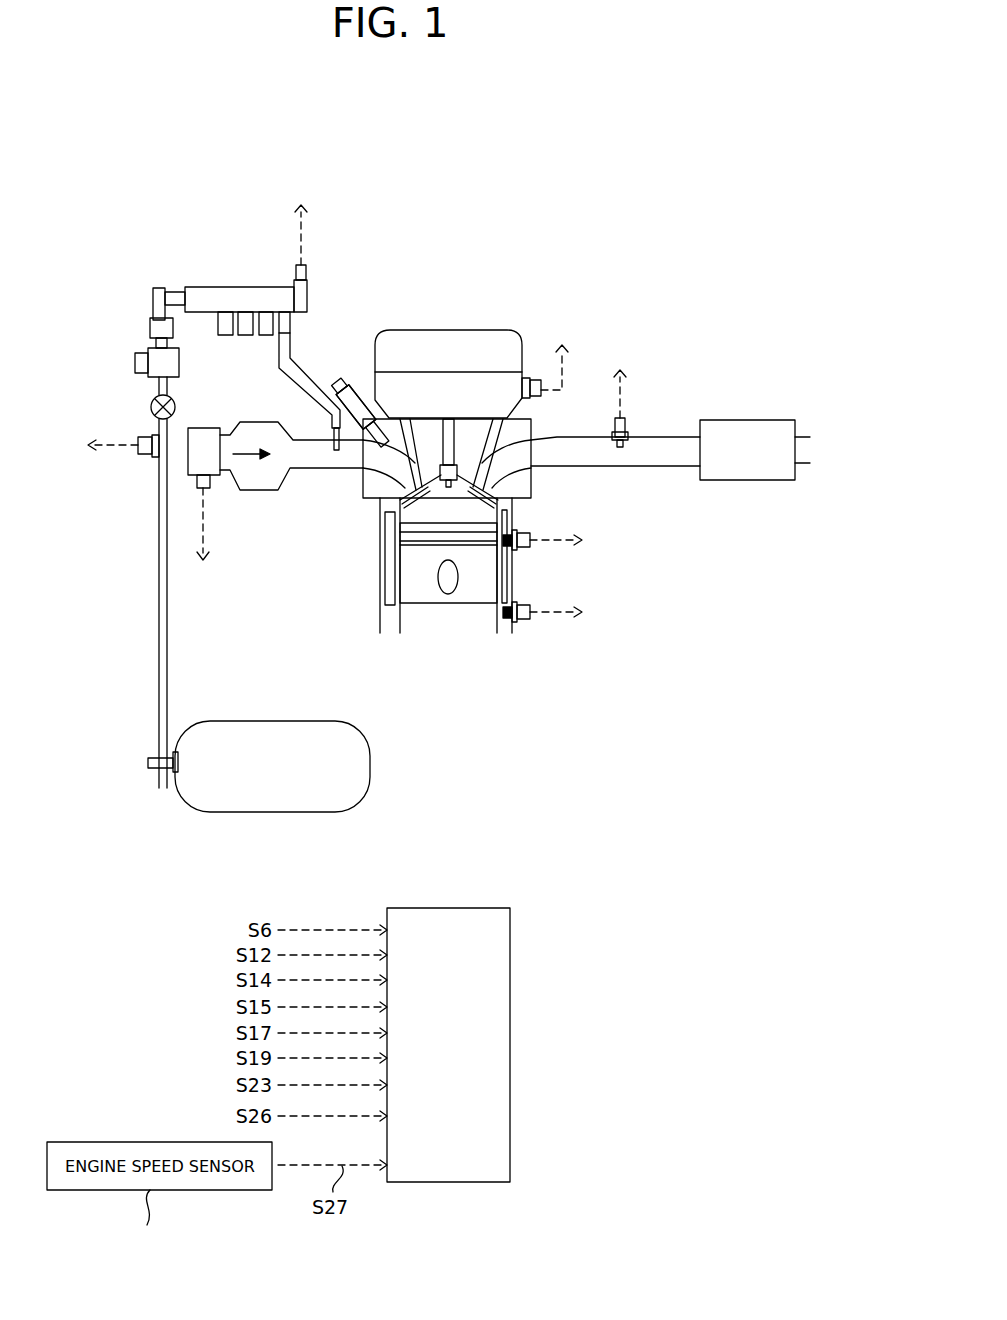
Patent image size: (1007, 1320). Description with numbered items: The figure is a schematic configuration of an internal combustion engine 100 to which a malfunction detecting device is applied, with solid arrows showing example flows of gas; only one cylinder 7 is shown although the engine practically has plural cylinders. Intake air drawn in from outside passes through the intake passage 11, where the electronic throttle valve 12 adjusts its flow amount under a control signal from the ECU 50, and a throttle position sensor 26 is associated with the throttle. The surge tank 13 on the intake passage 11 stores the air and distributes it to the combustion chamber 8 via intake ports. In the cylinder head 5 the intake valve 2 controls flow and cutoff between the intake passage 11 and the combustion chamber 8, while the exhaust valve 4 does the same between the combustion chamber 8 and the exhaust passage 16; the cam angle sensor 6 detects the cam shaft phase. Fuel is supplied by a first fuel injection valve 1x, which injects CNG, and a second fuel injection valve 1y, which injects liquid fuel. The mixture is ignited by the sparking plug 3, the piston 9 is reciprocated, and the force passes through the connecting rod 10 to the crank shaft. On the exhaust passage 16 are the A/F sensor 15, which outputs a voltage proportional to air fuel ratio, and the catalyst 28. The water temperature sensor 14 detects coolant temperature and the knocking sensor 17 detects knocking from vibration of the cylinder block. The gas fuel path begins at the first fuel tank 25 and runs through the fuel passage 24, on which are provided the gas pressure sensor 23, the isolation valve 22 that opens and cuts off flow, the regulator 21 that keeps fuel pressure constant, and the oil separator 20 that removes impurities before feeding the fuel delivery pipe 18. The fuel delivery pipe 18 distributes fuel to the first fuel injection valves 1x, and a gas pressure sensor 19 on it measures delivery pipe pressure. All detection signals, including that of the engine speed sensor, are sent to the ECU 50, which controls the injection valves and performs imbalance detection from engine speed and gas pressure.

The internal combustion engine 100 is at (384, 121).
The first fuel injection valve 1x is at (330, 392).
The second fuel injection valve 1y is at (366, 398).
The intake valve 2 is at (363, 492).
The sparking plug 3 is at (457, 433).
The exhaust valve 4 is at (531, 480).
The cylinder head 5 is at (570, 401).
The cam angle sensor 6 is at (526, 356).
The cylinder 7 is at (380, 628).
The combustion chamber 8 is at (443, 513).
The piston 9 is at (410, 588).
The connecting rod 10 is at (450, 580).
The intake passage 11 is at (317, 458).
The electronic throttle valve 12 is at (204, 428).
The surge tank 13 is at (258, 477).
The water temperature sensor 14 is at (530, 548).
The A/F sensor 15 is at (628, 432).
The exhaust passage 16 is at (662, 437).
The knocking sensor 17 is at (530, 620).
The fuel delivery pipe 18 is at (262, 298).
The gas pressure sensor 19 is at (307, 297).
The oil separator 20 is at (148, 318).
The regulator 21 is at (148, 348).
The isolation valve 22 is at (151, 406).
The gas pressure sensor 23 is at (143, 455).
The fuel passage 24 is at (159, 520).
The first fuel tank 25 is at (272, 720).
The throttle position sensor 26 is at (212, 490).
The catalyst 28 is at (745, 420).
The ECU 50 is at (455, 905).